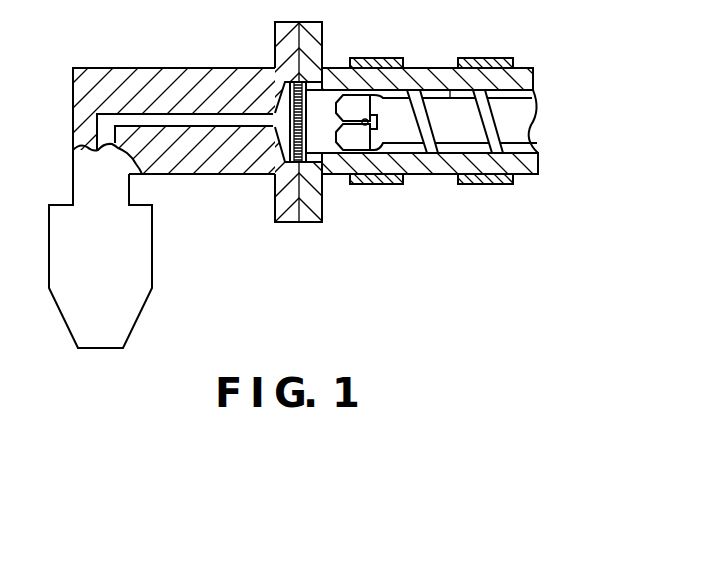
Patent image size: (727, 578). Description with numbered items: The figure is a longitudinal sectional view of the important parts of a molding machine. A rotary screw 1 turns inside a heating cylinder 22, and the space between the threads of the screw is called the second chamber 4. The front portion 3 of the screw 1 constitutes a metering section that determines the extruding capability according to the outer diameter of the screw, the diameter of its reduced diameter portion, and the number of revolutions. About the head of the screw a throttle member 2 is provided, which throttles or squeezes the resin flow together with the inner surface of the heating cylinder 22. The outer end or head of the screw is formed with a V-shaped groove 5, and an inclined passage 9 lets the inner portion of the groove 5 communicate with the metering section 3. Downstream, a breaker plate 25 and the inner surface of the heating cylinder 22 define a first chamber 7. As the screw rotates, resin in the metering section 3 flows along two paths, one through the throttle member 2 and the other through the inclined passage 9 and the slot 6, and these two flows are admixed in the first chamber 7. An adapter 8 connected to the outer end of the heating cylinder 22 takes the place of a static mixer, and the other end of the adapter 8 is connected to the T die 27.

The rotary screw 1 is at (513, 124).
The throttle member 2 is at (352, 90).
The front portion (metering section) 3 is at (418, 68).
The second chamber 4 is at (385, 92).
The V-shaped groove 5 is at (342, 122).
The slot 6 is at (364, 126).
The first chamber 7 is at (328, 125).
The adapter 8 is at (127, 75).
The inclined passage 9 is at (375, 120).
The heating cylinder 22 is at (429, 168).
The breaker plate 25 is at (292, 145).
The T die 27 is at (145, 249).